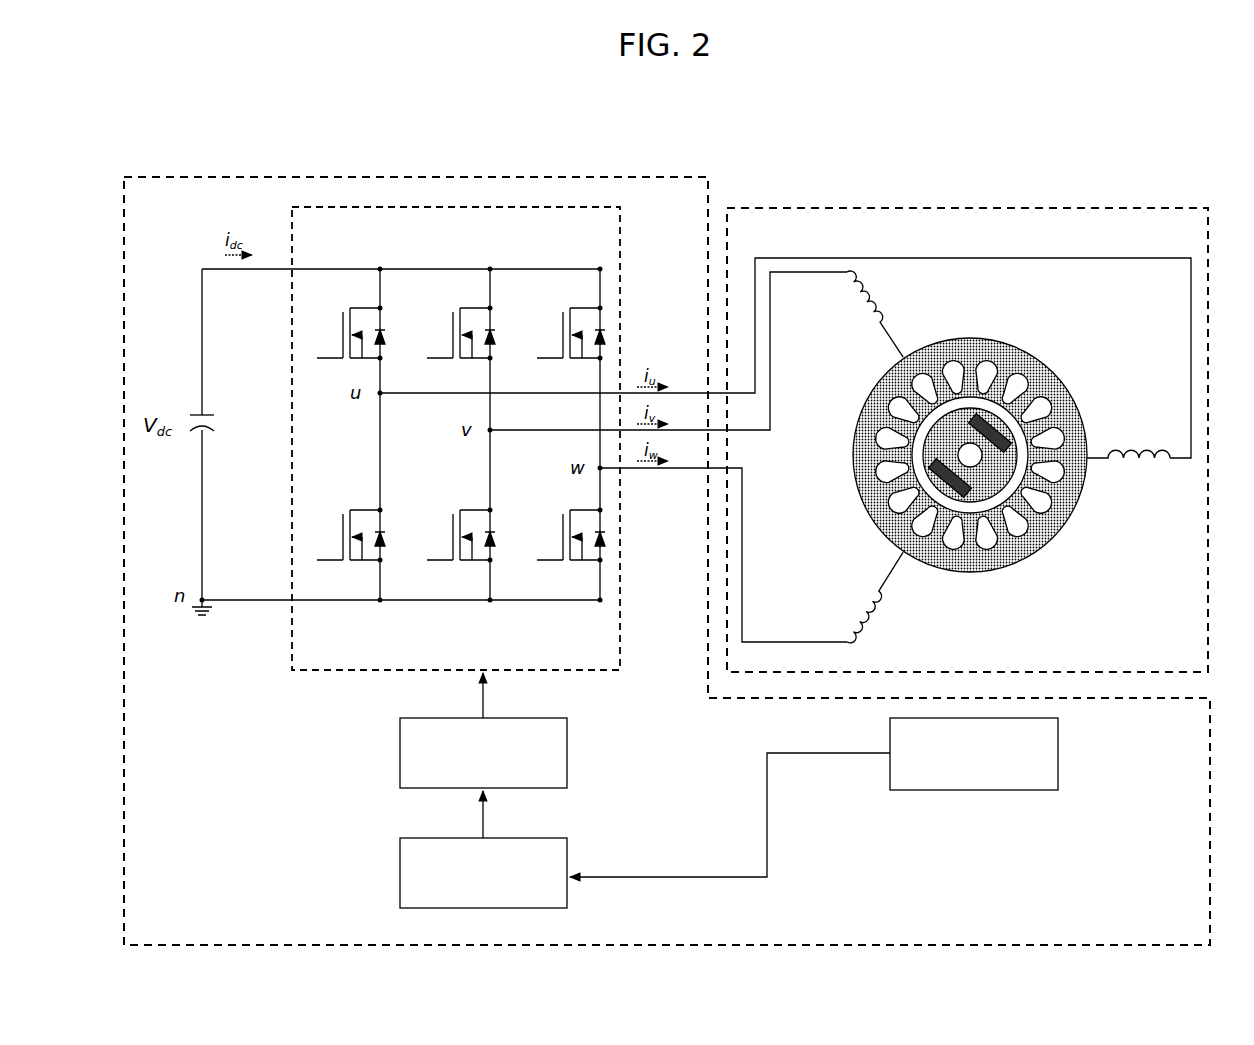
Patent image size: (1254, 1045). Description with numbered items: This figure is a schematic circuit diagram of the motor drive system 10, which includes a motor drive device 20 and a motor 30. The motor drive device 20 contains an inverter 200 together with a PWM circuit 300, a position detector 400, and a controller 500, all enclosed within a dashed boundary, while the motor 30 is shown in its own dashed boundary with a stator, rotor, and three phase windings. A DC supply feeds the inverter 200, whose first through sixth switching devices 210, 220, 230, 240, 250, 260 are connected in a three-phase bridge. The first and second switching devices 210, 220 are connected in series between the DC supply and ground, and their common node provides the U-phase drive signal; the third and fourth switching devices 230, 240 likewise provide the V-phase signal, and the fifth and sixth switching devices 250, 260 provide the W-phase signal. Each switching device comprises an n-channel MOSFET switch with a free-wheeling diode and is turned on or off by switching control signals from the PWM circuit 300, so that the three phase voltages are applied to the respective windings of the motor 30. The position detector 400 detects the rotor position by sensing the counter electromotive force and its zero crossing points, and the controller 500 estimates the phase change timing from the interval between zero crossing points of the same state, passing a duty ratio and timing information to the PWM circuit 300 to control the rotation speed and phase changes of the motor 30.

The motor drive system 10 is at (885, 110).
The motor drive device 20 is at (390, 177).
The motor 30 is at (1000, 208).
The inverter 200 is at (515, 207).
The first switching device 210 is at (362, 302).
The second switching device 220 is at (362, 507).
The third switching device 230 is at (472, 302).
The fourth switching device 240 is at (470, 507).
The fifth switching device 250 is at (585, 302).
The sixth switching device 260 is at (582, 507).
The PWM circuit 300 is at (400, 757).
The position detector 400 is at (1058, 754).
The controller 500 is at (400, 878).